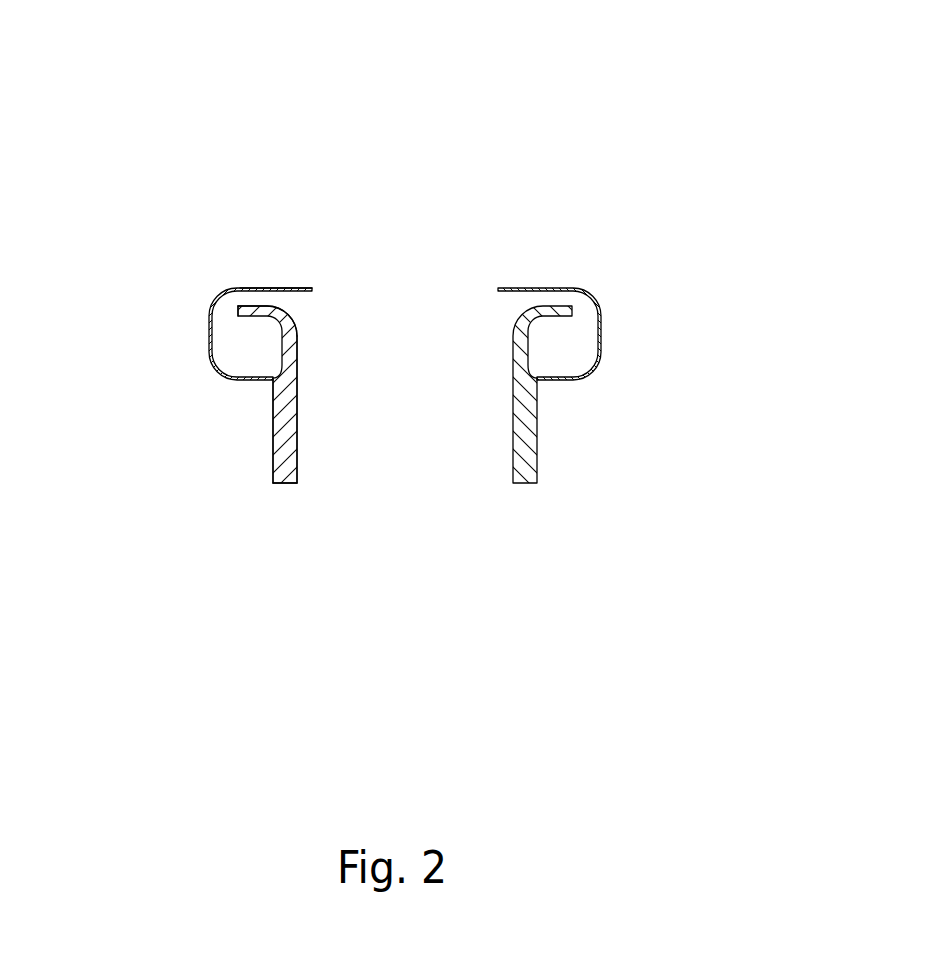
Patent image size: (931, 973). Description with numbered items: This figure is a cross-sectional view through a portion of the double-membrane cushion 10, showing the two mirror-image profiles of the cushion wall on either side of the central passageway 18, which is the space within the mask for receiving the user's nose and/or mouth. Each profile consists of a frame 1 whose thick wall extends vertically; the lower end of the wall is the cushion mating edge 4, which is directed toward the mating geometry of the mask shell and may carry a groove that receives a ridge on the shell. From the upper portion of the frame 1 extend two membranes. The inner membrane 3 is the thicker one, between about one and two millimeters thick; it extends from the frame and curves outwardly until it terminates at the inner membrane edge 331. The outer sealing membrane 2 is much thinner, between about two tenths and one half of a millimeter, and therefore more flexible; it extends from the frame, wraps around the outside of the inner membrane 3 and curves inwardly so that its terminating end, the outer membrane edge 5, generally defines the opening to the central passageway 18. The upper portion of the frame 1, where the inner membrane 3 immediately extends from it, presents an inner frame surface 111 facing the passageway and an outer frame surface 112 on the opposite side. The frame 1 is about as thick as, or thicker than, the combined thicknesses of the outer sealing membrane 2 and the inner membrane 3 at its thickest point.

The frame 1 is at (280, 463).
The outer sealing membrane 2 is at (205, 323).
The inner membrane 3 is at (297, 328).
The cushion mating edge 4 is at (282, 490).
The outer membrane edge 5 is at (307, 282).
The double-membrane cushion 10 is at (672, 179).
The central passageway 18 is at (402, 433).
The inner frame surface 111 is at (300, 385).
The outer frame surface 112 is at (270, 393).
The inner membrane edge 331 is at (238, 302).